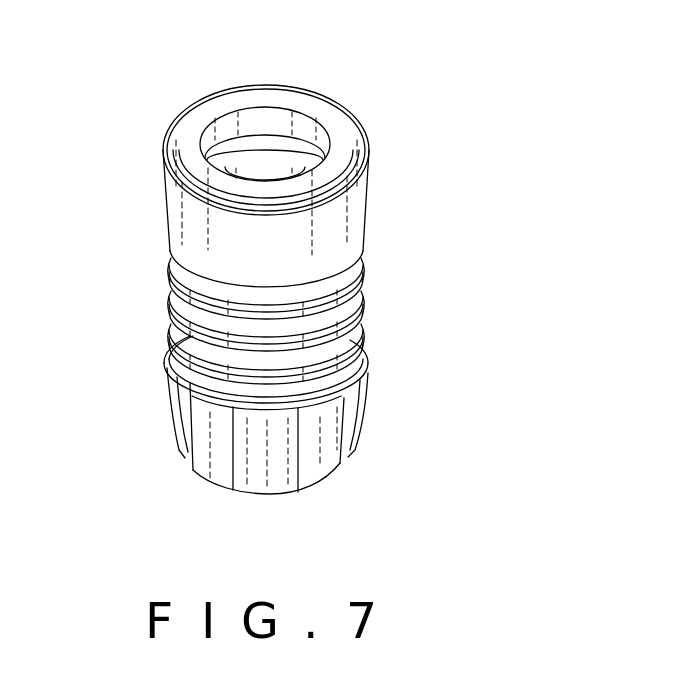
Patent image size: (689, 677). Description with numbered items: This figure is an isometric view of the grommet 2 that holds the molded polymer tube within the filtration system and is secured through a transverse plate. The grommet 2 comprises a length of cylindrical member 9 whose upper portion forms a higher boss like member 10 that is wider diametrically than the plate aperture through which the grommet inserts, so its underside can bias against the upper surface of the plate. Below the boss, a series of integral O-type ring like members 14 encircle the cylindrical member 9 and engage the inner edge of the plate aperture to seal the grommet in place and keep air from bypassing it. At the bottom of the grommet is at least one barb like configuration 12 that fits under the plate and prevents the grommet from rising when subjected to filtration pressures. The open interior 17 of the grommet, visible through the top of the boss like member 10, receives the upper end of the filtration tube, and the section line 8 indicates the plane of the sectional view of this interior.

The grommet 2 is at (295, 248).
The section line 8- 8 is at (260, 162).
The cylindrical member 9 is at (158, 318).
The boss like member 10 is at (165, 165).
The barb like configuration 12 is at (283, 415).
The O-type ring like members 14 is at (353, 306).
The interior 17 is at (278, 160).